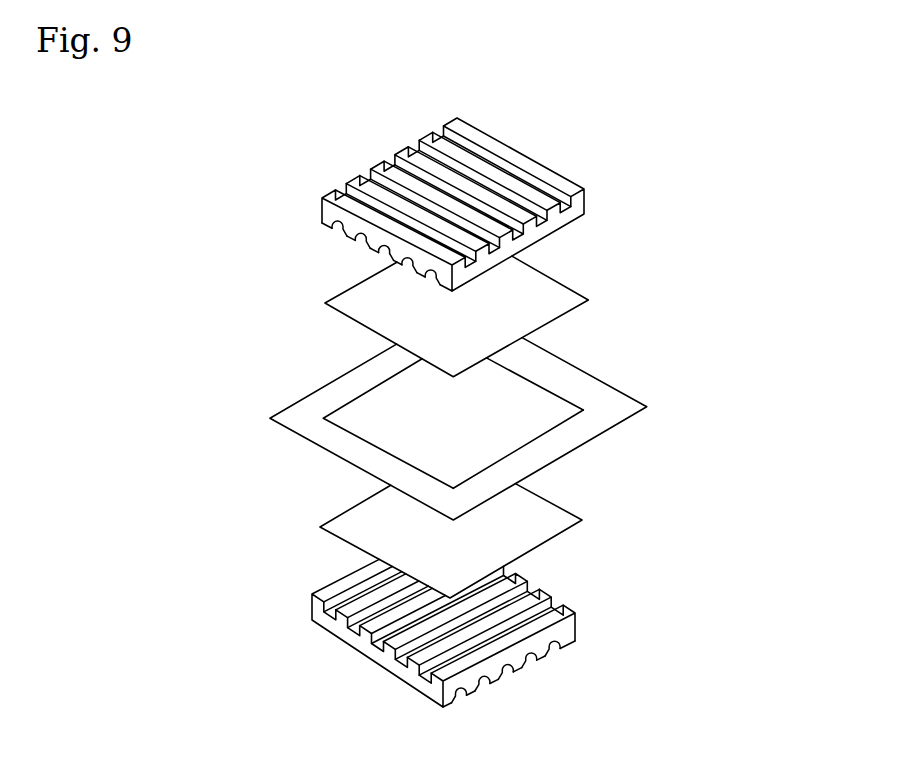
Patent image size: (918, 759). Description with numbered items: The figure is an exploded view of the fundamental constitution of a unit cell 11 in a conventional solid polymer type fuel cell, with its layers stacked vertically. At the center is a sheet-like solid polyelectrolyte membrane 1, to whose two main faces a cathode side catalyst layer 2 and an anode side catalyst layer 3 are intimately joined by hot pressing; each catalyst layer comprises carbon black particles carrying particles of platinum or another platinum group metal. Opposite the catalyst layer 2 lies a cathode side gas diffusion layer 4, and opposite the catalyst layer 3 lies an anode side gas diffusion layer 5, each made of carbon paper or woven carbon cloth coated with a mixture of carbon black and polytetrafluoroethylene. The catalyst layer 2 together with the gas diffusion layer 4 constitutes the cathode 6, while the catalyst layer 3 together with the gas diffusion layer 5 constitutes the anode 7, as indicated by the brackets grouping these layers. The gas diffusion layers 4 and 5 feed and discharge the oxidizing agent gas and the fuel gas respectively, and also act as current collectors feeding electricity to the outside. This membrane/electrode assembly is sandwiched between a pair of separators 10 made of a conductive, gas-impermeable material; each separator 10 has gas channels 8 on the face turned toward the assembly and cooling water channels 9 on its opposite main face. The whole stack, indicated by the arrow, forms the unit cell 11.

The solid polyelectrolyte membrane 1 is at (621, 389).
The cathode side catalyst layer 2 is at (330, 429).
The anode side catalyst layer 3 is at (567, 421).
The cathode side gas diffusion layer 4 is at (356, 290).
The anode side gas diffusion layer 5 is at (567, 511).
The cathode 6 is at (273, 265).
The anode 7 is at (677, 430).
The gas channels 8 is at (332, 233).
The cooling water channels 9 is at (392, 182).
The separator 10 is at (584, 201).
The unit cell 11 is at (671, 244).